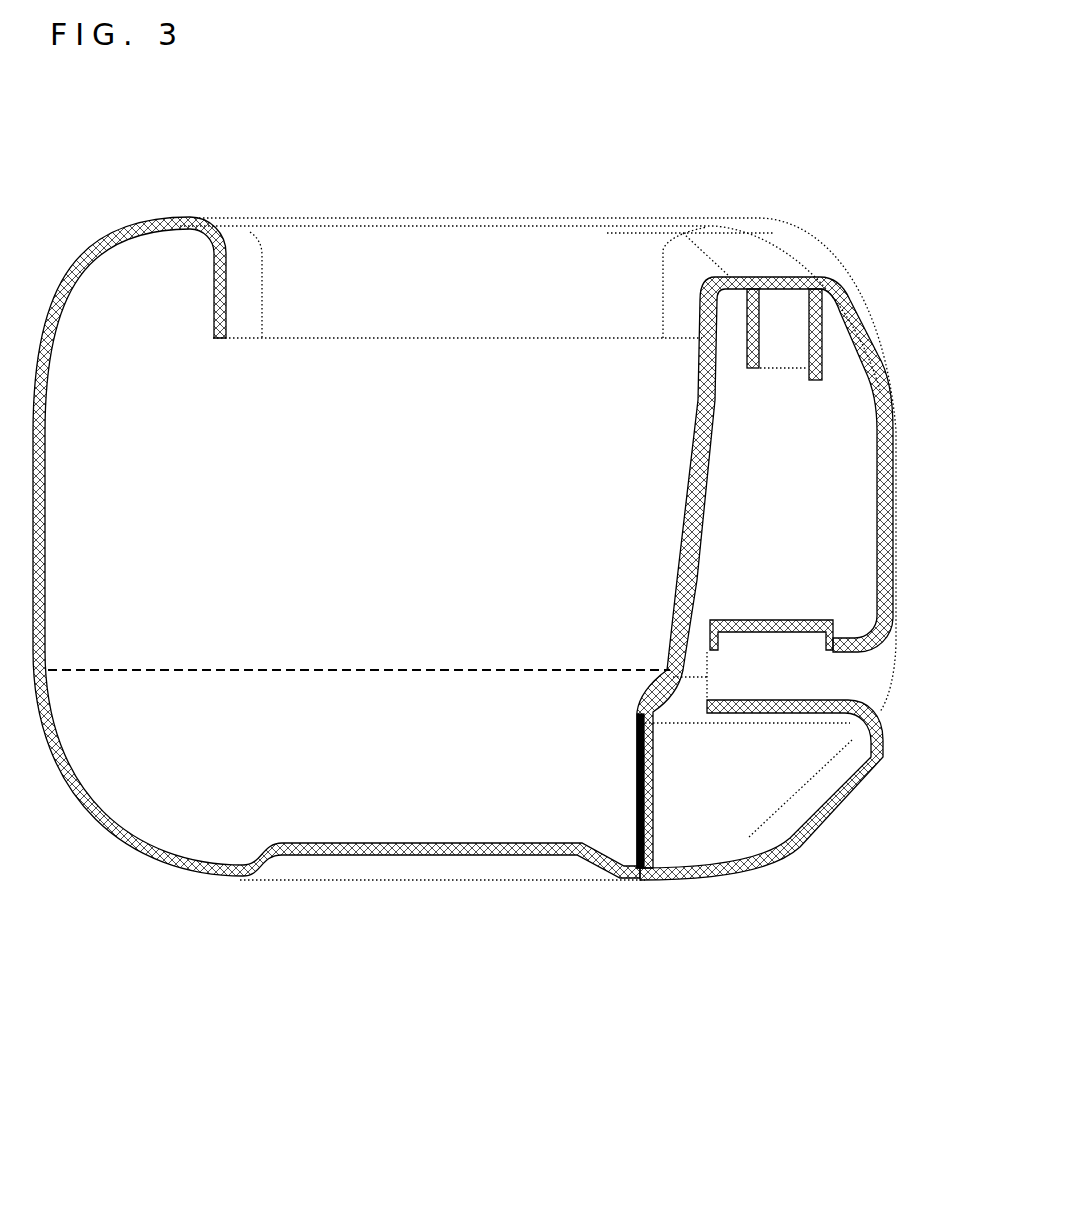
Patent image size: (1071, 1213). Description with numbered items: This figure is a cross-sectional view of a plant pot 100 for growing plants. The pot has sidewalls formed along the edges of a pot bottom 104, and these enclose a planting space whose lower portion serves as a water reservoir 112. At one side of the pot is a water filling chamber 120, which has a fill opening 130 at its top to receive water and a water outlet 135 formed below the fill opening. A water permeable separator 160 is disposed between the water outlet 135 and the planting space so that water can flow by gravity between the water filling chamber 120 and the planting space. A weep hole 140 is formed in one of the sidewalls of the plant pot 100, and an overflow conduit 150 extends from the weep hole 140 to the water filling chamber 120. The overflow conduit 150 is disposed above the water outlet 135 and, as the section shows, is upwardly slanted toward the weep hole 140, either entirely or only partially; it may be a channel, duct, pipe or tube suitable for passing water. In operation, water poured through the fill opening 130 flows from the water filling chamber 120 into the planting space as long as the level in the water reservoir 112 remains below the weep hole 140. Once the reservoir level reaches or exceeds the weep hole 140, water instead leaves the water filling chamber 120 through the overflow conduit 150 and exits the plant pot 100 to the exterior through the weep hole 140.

The plant pot 100 is at (461, 1051).
The pot bottom 104 is at (303, 845).
The water reservoir 112 is at (203, 742).
The water filling chamber 120 is at (822, 457).
The fill opening 130 is at (777, 292).
The water outlet 135 is at (662, 699).
The weep hole 140 is at (845, 665).
The overflow conduit 150 is at (782, 658).
The water permeable separator 160 is at (647, 700).